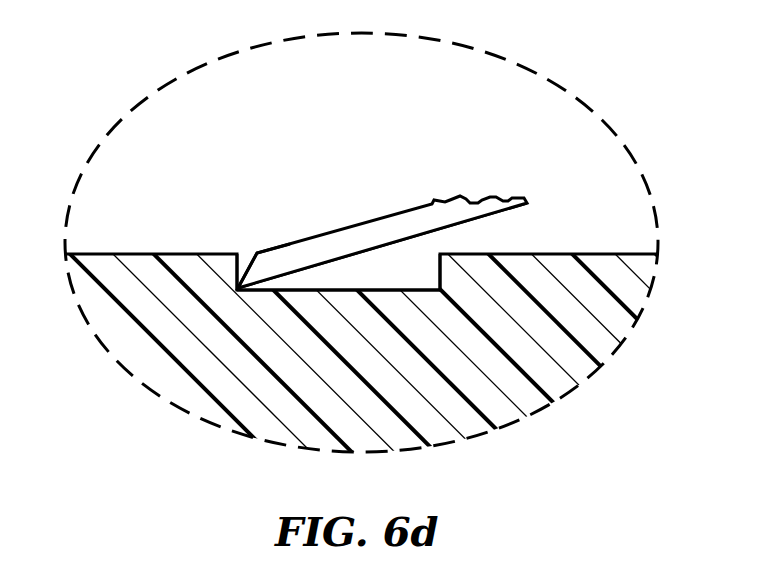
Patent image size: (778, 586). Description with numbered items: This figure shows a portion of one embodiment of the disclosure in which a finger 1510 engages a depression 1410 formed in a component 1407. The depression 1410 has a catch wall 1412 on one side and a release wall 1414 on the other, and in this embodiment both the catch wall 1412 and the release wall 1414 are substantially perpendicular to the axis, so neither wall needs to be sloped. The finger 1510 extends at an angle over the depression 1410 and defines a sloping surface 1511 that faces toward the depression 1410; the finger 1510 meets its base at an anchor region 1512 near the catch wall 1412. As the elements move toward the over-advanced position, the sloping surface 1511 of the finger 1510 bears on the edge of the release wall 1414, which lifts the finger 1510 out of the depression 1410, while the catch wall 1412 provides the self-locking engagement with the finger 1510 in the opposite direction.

The substrate 1407 is at (562, 254).
The depression 1410 is at (343, 290).
The catch wall 1412 is at (233, 273).
The release wall 1414 is at (441, 272).
The finger 1510 is at (388, 212).
The sloping surface 1511 is at (377, 247).
The lever anchor corner 1512 is at (254, 254).